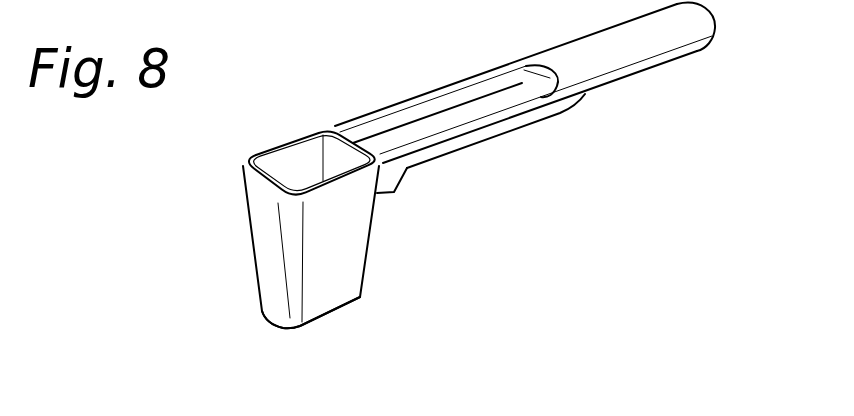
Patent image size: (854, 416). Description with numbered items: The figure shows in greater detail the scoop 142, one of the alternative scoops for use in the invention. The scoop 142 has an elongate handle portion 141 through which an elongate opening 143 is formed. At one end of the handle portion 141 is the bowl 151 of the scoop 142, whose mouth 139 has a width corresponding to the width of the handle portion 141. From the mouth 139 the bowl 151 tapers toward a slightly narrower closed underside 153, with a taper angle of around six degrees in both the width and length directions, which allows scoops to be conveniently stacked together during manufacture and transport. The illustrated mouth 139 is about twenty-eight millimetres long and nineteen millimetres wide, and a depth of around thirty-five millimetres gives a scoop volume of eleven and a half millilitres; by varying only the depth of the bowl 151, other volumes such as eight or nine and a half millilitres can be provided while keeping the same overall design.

The mouth 139 is at (288, 163).
The handle portion 141 is at (626, 72).
The scoop 142 is at (535, 147).
The elongate opening 143 is at (435, 122).
The bowl 151 is at (352, 230).
The closed underside 153 is at (318, 318).